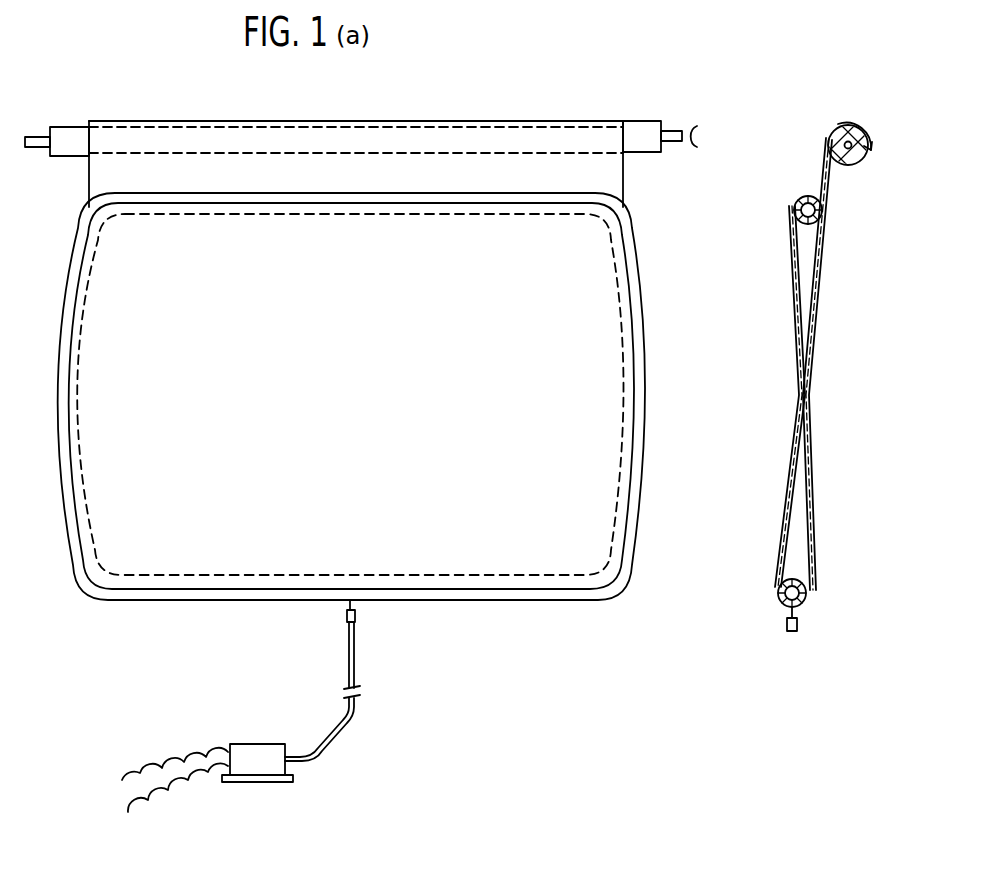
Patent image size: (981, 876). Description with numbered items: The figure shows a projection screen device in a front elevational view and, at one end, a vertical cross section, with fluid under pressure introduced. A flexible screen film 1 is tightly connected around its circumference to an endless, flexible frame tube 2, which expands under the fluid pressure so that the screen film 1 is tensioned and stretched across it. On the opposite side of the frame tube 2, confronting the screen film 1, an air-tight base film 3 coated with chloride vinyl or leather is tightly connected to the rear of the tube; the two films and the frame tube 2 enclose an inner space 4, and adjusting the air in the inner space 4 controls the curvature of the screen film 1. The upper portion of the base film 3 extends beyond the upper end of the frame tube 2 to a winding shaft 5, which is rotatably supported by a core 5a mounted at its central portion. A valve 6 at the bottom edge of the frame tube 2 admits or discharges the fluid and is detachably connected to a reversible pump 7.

In FIG. 1A, the screen film 1 is at (577, 336).
In FIG. 1B, the screen film 1 is at (798, 343).
In FIG. 1A, the frame tube 2 is at (630, 258).
In FIG. 1B, the frame tube 2 is at (805, 200).
In FIG. 1A, the base film 3 is at (610, 174).
In FIG. 1B, the base film 3 is at (813, 323).
In FIG. 1B, the inner space 4 is at (806, 364).
In FIG. 1A, the winding shaft 5 is at (643, 126).
In FIG. 1B, the winding shaft 5 is at (847, 122).
In FIG. 1A, the core 5a is at (677, 128).
In FIG. 1B, the core 5a is at (855, 164).
In FIG. 1A, the valve 6 is at (357, 615).
In FIG. 1B, the valve 6 is at (798, 628).
In FIG. 1A, the reversible pump 7 is at (260, 752).